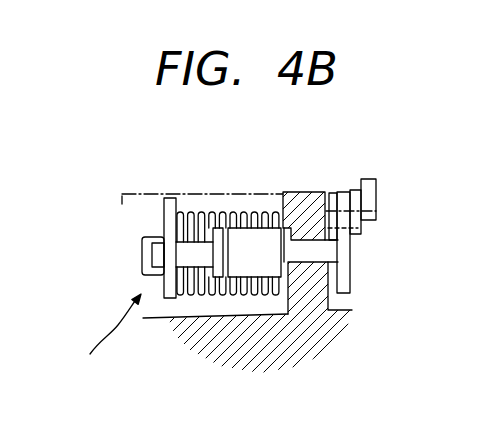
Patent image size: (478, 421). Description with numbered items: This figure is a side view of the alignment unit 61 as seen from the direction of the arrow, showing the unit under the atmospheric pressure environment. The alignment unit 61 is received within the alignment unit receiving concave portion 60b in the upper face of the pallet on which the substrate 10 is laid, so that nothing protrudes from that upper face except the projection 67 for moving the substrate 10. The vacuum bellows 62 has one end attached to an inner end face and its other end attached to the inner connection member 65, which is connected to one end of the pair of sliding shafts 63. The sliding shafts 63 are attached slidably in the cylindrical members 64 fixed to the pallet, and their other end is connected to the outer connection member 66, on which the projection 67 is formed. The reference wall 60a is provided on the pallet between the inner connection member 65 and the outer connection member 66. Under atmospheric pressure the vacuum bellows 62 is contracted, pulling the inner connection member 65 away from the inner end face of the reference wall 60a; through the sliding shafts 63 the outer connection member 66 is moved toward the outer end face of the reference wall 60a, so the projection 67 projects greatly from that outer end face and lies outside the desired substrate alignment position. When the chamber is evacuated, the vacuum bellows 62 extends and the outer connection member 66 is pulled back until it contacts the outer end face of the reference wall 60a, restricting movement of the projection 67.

The substrate 10 is at (133, 200).
The reference wall 60a is at (300, 198).
The alignment unit receiving concave portion 60b is at (128, 225).
The alignment unit 61 is at (104, 336).
The vacuum bellows 62 is at (208, 212).
The sliding shaft 63 is at (343, 279).
The cylindrical member 64 is at (262, 228).
The inner connection member 65 is at (170, 199).
The outer connection member 66 is at (360, 232).
The projection 67 is at (375, 180).